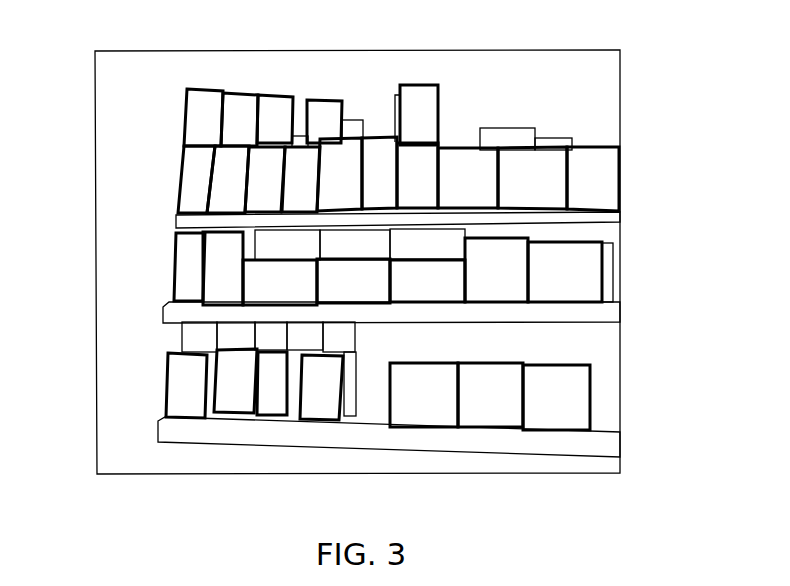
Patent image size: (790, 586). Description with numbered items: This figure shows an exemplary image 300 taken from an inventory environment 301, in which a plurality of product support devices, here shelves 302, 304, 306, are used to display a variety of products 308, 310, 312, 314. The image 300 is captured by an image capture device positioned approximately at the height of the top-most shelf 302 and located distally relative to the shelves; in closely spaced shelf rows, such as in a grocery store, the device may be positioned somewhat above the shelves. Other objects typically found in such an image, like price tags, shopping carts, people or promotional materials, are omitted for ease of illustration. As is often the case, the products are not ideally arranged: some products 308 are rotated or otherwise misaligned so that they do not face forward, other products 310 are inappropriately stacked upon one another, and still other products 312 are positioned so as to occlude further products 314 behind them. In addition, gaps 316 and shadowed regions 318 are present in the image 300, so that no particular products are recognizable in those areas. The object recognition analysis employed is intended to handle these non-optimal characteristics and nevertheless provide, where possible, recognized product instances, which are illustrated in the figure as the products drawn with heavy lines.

The image 300 is at (97, 227).
The inventory environment 301 is at (587, 93).
The top-most shelf 302 is at (603, 217).
The shelf 304 is at (603, 313).
The shelf 306 is at (603, 445).
The products 308 is at (178, 182).
The products 310 is at (421, 120).
The products 312 is at (320, 400).
The products 314 is at (180, 340).
The gaps 316 is at (368, 400).
The shadowed regions 318 is at (568, 345).